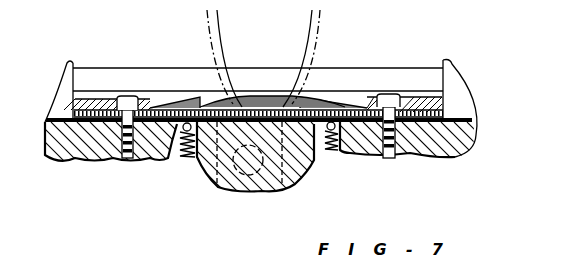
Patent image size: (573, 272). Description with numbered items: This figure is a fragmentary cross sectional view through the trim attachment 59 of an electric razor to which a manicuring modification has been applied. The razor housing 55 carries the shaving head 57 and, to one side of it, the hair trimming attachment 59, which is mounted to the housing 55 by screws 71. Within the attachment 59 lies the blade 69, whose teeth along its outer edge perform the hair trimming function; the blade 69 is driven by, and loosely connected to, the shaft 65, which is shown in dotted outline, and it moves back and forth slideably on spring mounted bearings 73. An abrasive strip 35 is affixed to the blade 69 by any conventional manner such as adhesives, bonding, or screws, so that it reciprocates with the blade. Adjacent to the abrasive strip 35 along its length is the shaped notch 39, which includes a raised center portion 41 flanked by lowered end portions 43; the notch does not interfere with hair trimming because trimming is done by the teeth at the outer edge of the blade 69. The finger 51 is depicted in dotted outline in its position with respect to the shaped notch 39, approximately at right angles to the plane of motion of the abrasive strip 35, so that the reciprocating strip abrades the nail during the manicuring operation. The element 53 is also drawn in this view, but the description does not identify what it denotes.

The abrasive strip 35 is at (270, 156).
The shaped notch 39 is at (279, 90).
The raised center portion 41 is at (252, 98).
The lowered end portions 43 is at (178, 100).
The finger 51 is at (203, 20).
The tube wall 53 is at (317, 58).
The razor housing 55 is at (463, 113).
The shaving head 57 is at (115, 77).
The trim attachment 59 is at (408, 100).
The shaft 65 is at (236, 190).
The blade 69 is at (258, 192).
The screws 71 is at (121, 160).
The spring mounted bearings 73 is at (167, 157).